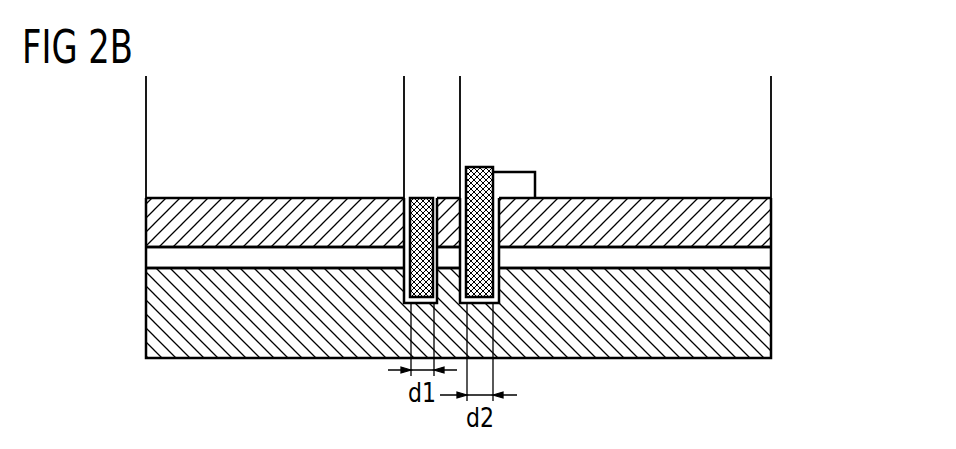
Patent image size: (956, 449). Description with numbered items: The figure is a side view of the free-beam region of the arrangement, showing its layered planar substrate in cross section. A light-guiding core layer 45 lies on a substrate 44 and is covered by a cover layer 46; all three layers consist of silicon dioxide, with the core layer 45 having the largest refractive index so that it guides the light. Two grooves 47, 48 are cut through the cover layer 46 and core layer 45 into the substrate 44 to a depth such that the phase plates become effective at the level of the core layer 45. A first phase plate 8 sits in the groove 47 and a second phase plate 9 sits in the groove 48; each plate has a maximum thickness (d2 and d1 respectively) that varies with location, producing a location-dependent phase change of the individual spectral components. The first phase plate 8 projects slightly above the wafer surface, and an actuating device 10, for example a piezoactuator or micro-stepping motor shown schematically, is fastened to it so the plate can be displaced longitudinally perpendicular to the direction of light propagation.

The first phase plate 8 is at (480, 167).
The second phase plate 9 is at (423, 197).
The actuating device 10 is at (512, 180).
The substrate 44 is at (763, 327).
The core layer 45 is at (763, 260).
The cover layer 46 is at (763, 217).
The groove 47 is at (499, 285).
The groove 48 is at (403, 285).